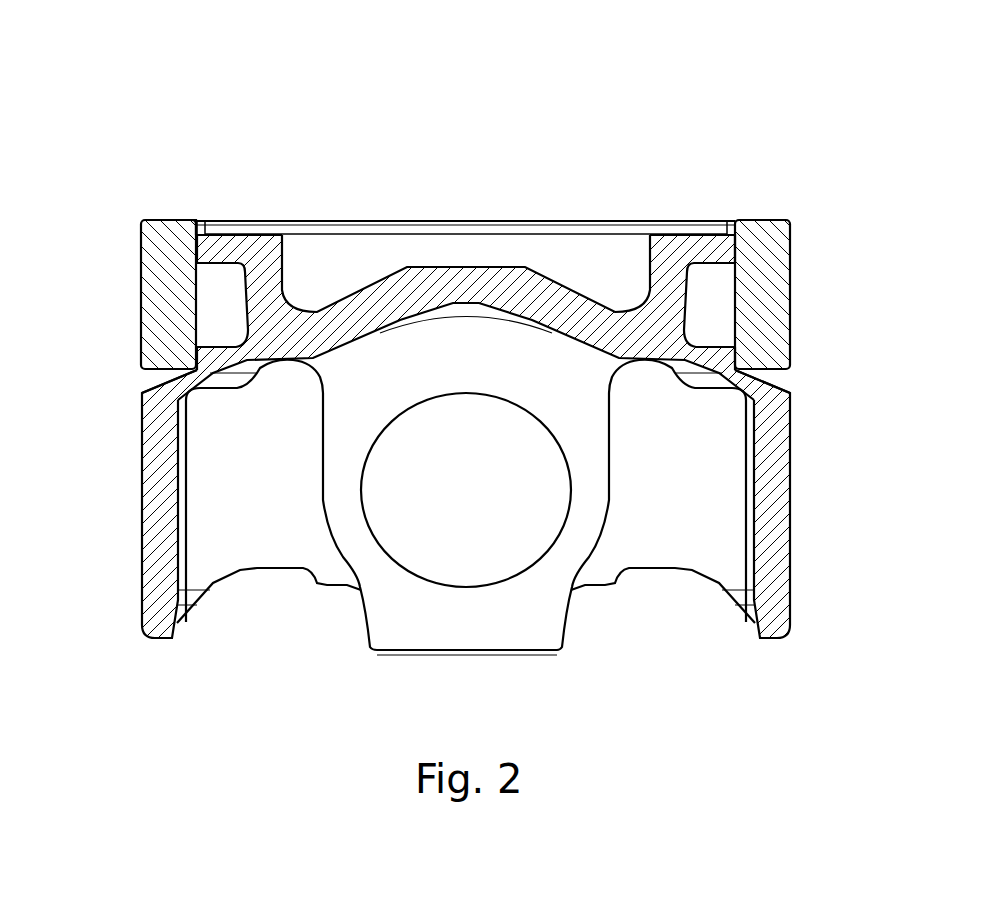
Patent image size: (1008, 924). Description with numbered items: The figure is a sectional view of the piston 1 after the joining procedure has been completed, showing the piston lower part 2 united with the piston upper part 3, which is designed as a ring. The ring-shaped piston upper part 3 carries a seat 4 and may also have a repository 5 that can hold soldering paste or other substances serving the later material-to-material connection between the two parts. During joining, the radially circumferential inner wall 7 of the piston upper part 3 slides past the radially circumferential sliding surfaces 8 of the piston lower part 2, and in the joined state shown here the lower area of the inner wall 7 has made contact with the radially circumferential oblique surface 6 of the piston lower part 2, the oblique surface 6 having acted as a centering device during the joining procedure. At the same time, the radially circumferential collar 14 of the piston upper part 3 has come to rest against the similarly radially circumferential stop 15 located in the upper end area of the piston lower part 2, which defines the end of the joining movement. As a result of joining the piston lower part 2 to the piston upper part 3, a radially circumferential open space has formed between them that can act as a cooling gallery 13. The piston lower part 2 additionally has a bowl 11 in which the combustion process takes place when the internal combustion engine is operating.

The piston 1 is at (423, 150).
The piston lower part 2 is at (141, 493).
The piston upper part 3 is at (141, 307).
The seat 4 is at (716, 219).
The repository 5 is at (735, 216).
The oblique surface 6 is at (187, 382).
The inner wall 7 is at (187, 275).
The sliding surfaces 8 is at (717, 347).
The bowl 11 is at (612, 268).
The cooling gallery 13 is at (218, 325).
The collar 14 is at (198, 221).
The stop 15 is at (197, 229).